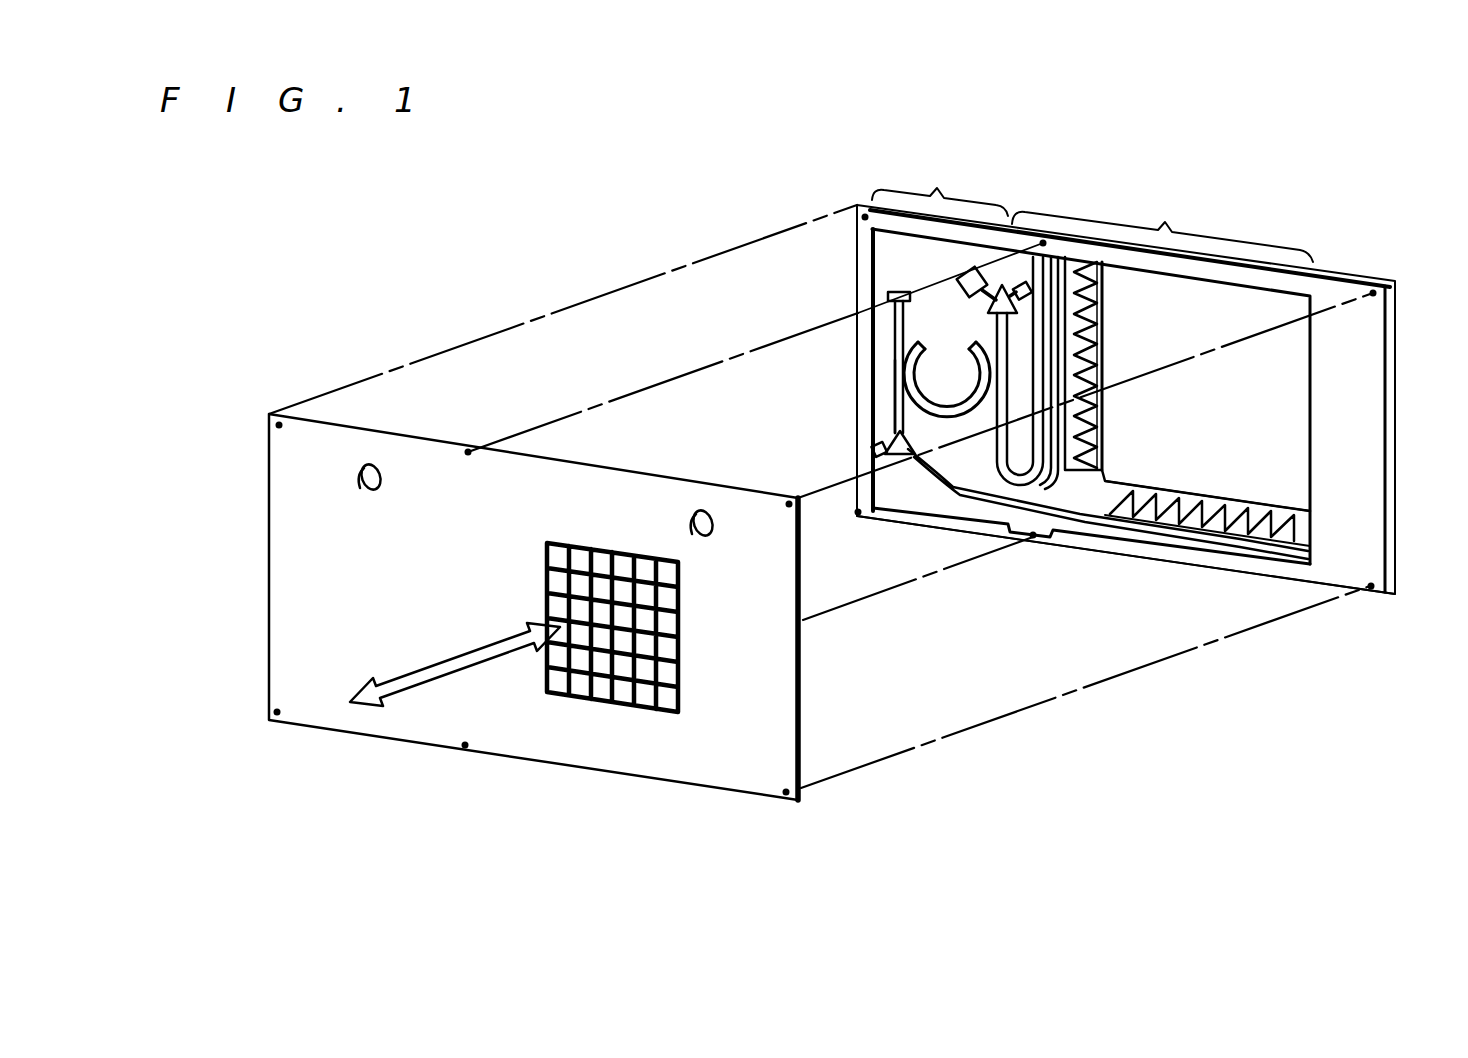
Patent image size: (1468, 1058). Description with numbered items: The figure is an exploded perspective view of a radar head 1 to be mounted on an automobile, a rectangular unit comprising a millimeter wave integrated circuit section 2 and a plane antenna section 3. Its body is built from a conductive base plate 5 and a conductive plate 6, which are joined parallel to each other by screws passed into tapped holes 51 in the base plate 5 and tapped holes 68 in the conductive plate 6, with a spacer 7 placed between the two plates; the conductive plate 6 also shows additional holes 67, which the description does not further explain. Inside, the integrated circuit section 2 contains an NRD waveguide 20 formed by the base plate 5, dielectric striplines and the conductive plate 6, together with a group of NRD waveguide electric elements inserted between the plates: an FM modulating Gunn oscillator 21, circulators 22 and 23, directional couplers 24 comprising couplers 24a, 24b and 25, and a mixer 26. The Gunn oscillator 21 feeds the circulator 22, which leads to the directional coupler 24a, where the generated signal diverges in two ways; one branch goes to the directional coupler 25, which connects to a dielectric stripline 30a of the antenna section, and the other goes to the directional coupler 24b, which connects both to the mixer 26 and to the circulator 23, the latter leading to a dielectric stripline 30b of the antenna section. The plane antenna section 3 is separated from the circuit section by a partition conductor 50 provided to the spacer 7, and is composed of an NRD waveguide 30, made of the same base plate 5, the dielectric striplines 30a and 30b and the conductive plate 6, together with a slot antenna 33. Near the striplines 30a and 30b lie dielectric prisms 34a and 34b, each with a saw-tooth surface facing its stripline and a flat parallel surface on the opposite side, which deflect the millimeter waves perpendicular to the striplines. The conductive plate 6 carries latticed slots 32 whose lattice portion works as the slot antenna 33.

The radar head 1 is at (297, 316).
The millimeter wave integrated circuit section 2 is at (940, 167).
The plane antenna section 3 is at (1162, 221).
The conductive base plate 5 is at (1395, 396).
The conductive plate 6 is at (269, 574).
The spacer 7 is at (1386, 471).
The NRD waveguide 20 is at (881, 350).
The FM modulating Gunn oscillator 21 is at (966, 268).
The circulator 22 is at (990, 300).
The circulator 23 is at (878, 440).
The directional couplers 24 is at (1020, 371).
The directional coupler 24a is at (947, 379).
The directional coupler 24b is at (893, 367).
The directional coupler 25 is at (1011, 512).
The mixer 26 is at (899, 292).
The NRD waveguide 30 is at (1190, 311).
The dielectric stripline 30a is at (1096, 300).
The dielectric stripline 30b is at (1243, 500).
The latticed slots 32 is at (668, 672).
The slot antenna 33 is at (695, 639).
The dielectric prism 34a is at (1100, 372).
The dielectric prism 34b is at (1160, 498).
The partition conductor 50 is at (1093, 393).
The tapped holes 51 is at (865, 217).
The holes 67 is at (366, 490).
The tapped holes 68 is at (279, 425).